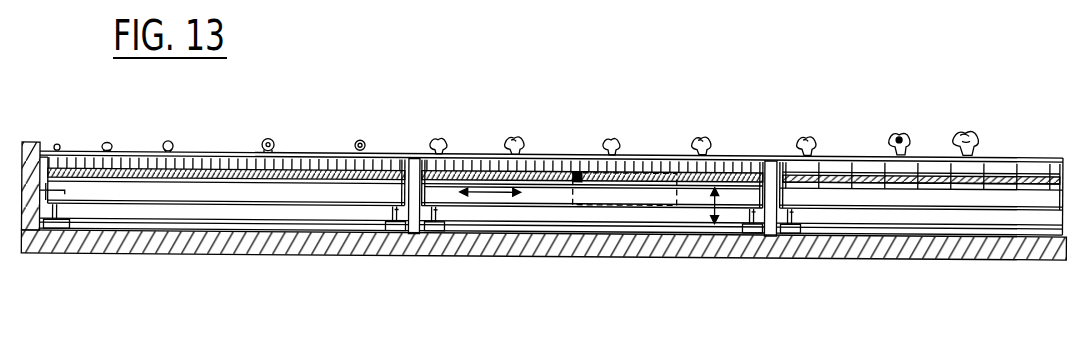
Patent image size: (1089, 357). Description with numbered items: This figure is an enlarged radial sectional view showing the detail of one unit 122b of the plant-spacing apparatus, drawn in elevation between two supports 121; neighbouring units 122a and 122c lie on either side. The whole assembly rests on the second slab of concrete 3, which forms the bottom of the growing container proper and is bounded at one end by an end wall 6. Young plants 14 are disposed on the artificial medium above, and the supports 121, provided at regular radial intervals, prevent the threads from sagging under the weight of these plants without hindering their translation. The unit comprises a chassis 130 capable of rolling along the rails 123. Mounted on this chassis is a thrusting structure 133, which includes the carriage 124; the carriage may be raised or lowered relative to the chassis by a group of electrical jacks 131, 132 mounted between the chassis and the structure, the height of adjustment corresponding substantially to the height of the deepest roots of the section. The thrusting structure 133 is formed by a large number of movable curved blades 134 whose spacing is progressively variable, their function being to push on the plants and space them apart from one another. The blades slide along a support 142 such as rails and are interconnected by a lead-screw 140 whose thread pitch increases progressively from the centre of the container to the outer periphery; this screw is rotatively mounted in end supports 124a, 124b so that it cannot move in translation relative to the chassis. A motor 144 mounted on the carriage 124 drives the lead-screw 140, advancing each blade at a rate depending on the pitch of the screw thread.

The second slab of concrete 3 is at (274, 244).
The end wall 6 is at (40, 142).
The young plants 14 is at (57, 143).
The support 121 is at (390, 164).
The unit 122a is at (192, 234).
The unit 122b is at (603, 232).
The unit 122c is at (949, 232).
The rails 123 is at (62, 215).
The carriage 124 is at (610, 163).
The end support 124a is at (403, 168).
The end support 124b is at (82, 162).
The chassis 130 is at (295, 218).
The electrical jack 131 is at (78, 215).
The electrical jack 132 is at (370, 191).
The thrusting structure 133 is at (222, 138).
The movable curved blades 134 is at (275, 164).
The lead-screw 140 is at (248, 164).
The support 142 is at (108, 193).
The motor 144 is at (655, 152).